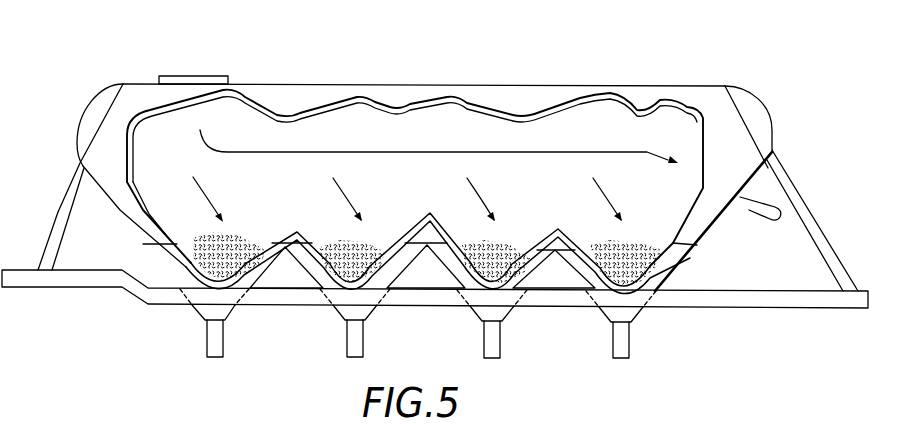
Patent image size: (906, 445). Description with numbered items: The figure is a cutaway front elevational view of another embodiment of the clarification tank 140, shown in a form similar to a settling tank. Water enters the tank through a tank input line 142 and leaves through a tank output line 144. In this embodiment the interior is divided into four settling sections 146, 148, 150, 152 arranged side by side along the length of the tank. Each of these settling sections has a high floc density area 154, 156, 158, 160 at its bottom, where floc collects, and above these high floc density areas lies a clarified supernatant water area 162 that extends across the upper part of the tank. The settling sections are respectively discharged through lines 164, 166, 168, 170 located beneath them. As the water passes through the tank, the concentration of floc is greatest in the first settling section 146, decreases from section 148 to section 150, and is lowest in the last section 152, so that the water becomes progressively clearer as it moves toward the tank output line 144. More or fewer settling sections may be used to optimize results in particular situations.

The clarification tank 140 is at (381, 80).
The tank input line 142 is at (192, 77).
The tank output line 144 is at (777, 209).
The settling section 146 is at (157, 268).
The settling section 148 is at (393, 282).
The settling section 150 is at (530, 280).
The settling section 152 is at (683, 258).
The high floc density area 154 is at (232, 238).
The high floc density area 156 is at (369, 246).
The high floc density area 158 is at (508, 241).
The high floc density area 160 is at (637, 236).
The clarified supernatant water area 162 is at (593, 127).
The discharge line 164 is at (207, 337).
The discharge line 166 is at (347, 337).
The discharge line 168 is at (500, 348).
The discharge line 170 is at (615, 357).